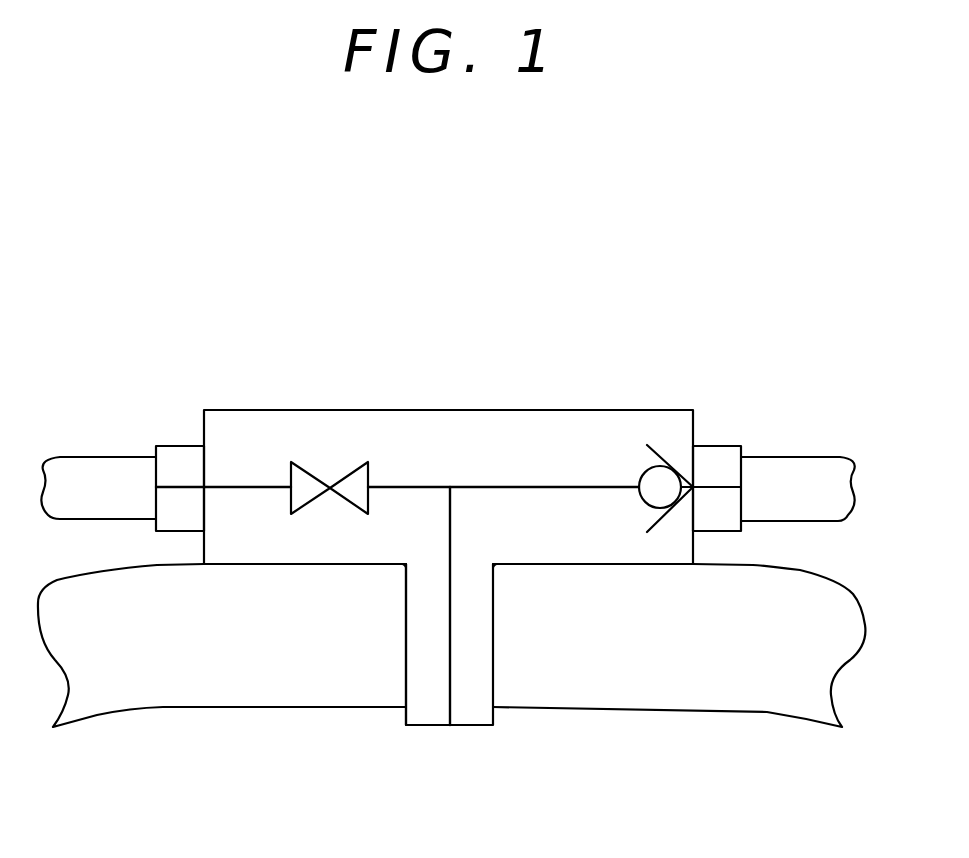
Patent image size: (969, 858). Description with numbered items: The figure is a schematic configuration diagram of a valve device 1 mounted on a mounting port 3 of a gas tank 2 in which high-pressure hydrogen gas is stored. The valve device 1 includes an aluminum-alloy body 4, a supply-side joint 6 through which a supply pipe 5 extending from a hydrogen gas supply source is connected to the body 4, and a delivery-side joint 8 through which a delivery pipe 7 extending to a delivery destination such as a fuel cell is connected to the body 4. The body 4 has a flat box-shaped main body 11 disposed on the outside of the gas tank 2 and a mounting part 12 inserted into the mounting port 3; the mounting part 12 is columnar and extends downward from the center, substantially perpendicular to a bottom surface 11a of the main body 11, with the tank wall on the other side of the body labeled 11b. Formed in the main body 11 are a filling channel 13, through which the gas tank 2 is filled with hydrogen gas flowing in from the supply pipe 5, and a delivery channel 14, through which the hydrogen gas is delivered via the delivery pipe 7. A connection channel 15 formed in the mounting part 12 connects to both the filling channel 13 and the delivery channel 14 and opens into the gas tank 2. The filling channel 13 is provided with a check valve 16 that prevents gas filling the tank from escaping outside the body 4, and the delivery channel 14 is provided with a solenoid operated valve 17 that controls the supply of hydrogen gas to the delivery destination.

The valve device 1 is at (103, 358).
The gas tank 2 is at (87, 583).
The mounting port 3 is at (493, 607).
The body 4 is at (327, 583).
The supply pipe 5 is at (797, 466).
The supply-side joint 6 is at (718, 458).
The delivery pipe 7 is at (100, 467).
The delivery-side joint 8 is at (179, 457).
The main body 11 is at (343, 557).
The bottom surface 11a is at (257, 564).
The upper wall portion 11b is at (695, 550).
The mounting part 12 is at (413, 627).
The filling channel 13 is at (522, 486).
The delivery channel 14 is at (240, 484).
The connection channel 15 is at (450, 653).
The check valve 16 is at (659, 454).
The solenoid operated valve 17 is at (317, 472).